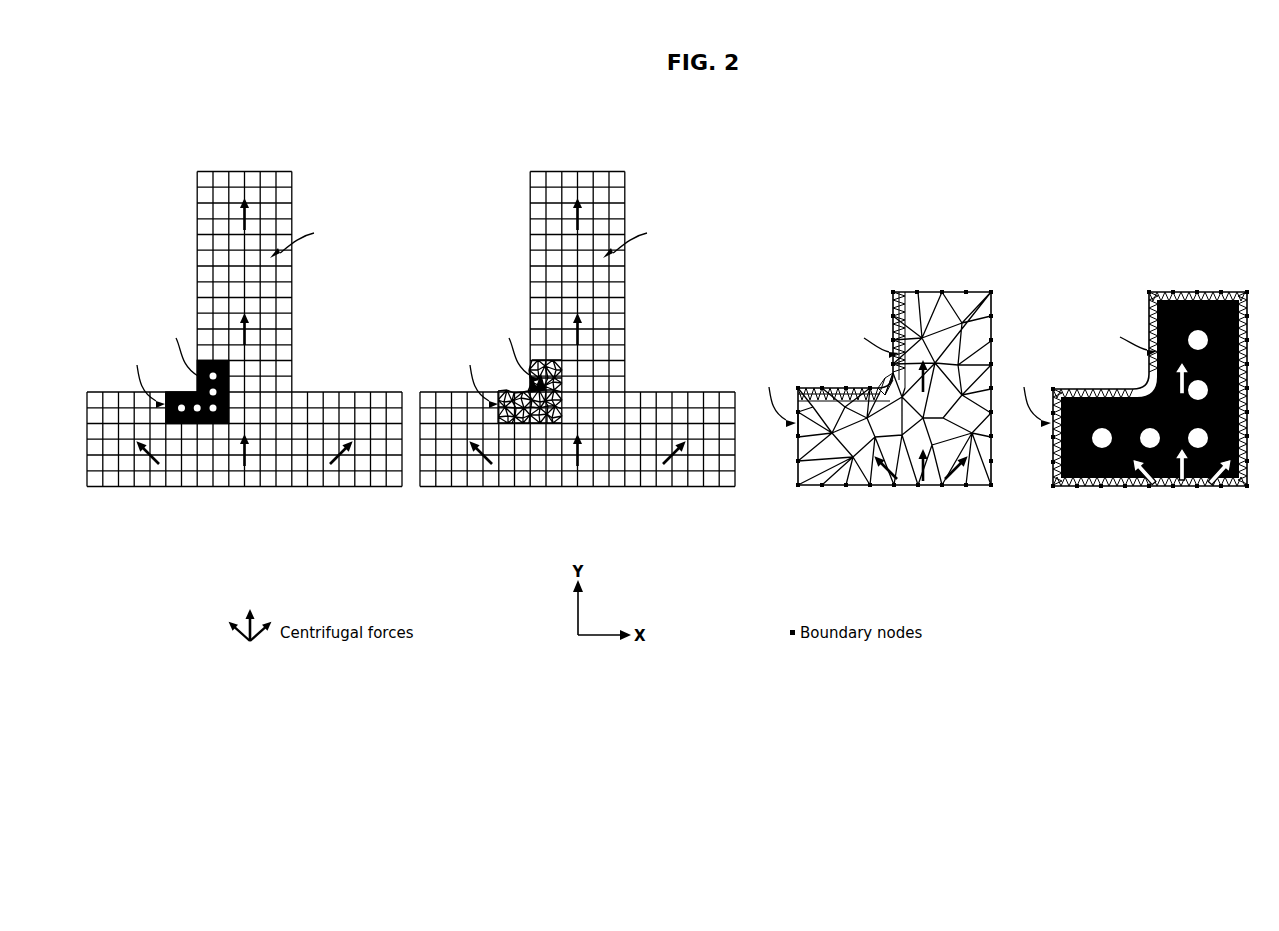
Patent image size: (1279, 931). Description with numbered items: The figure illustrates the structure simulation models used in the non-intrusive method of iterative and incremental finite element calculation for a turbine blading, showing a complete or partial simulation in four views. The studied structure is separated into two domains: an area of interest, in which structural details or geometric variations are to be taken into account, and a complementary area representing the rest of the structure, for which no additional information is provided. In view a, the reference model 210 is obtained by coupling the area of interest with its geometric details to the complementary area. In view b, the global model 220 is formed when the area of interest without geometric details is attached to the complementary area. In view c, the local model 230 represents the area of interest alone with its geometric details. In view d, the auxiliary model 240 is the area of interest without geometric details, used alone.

The reference model 210 is at (254, 148).
The global model 220 is at (587, 148).
The local model 230 is at (948, 262).
The auxiliary model 240 is at (1204, 262).